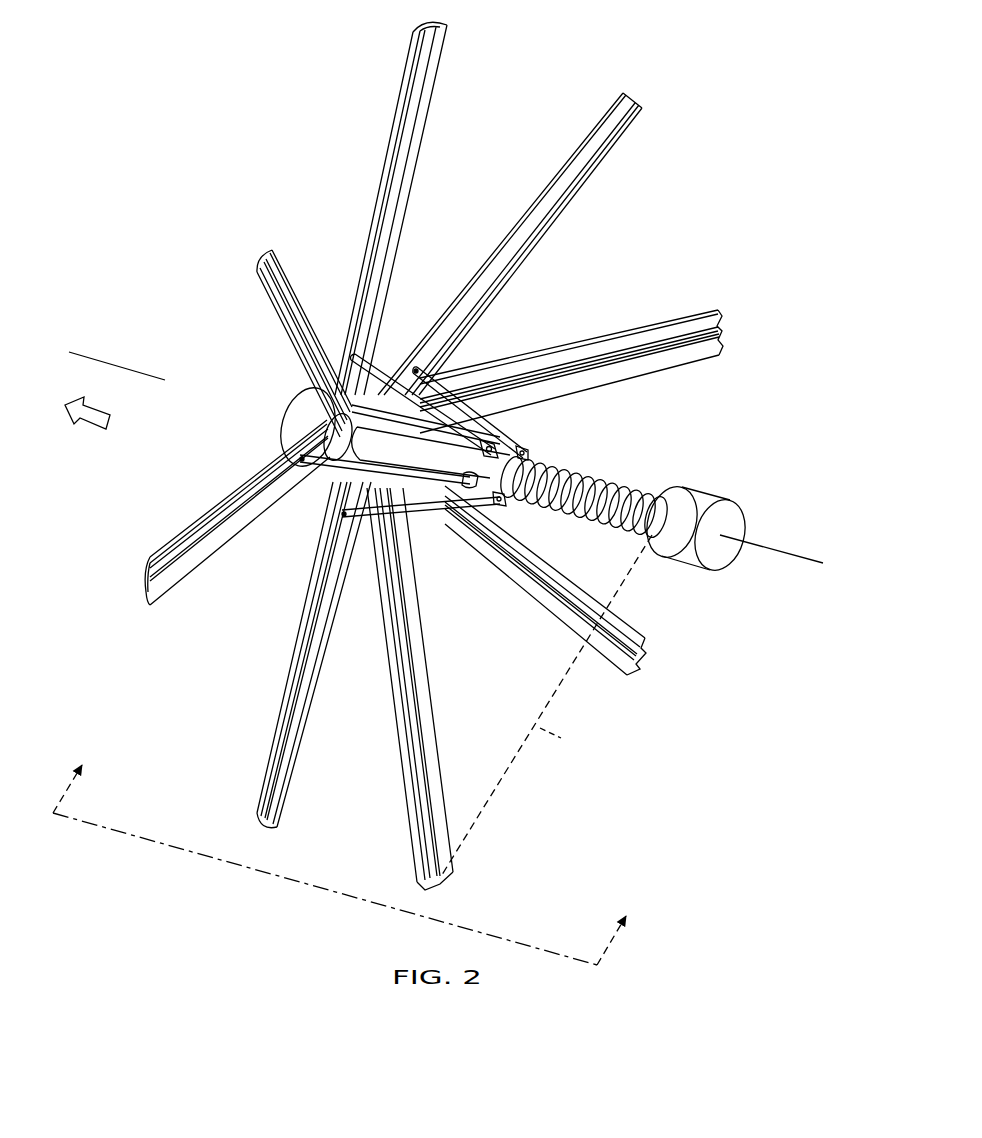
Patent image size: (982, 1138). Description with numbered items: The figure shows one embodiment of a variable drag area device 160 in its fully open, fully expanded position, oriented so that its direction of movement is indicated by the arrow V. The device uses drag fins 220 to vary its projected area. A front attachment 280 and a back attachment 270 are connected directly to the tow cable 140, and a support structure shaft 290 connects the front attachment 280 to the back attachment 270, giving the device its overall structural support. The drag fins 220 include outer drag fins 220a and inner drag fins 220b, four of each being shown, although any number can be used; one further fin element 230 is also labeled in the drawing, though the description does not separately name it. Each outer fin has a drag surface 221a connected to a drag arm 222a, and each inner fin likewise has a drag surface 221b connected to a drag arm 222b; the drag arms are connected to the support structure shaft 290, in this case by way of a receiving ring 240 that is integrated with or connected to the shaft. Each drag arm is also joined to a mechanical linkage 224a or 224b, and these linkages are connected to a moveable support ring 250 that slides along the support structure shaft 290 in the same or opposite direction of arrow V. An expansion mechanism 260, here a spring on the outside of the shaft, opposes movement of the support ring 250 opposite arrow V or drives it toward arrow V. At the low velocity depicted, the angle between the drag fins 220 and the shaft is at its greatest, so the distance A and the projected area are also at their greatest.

The variable drag area device 160 is at (213, 58).
The tow cable 140 is at (118, 366).
The blade 230 is at (270, 319).
The front attachment 280 is at (279, 397).
The receiving ring 240 is at (338, 452).
The mechanical linkage 224a is at (394, 362).
The mechanical linkage 224b is at (402, 524).
The support ring 250 is at (510, 446).
The support structure shaft 290 is at (420, 458).
The expansion mechanism 260 is at (623, 477).
The back attachment 270 is at (725, 516).
The outer drag fins 220a is at (181, 654).
The drag surface 221a is at (166, 520).
The drag arm 222a is at (242, 506).
The inner drag fins 220b is at (275, 859).
The drag surface 221b is at (264, 719).
The drag arm 222b is at (297, 640).
The drag fins 220 is at (397, 826).